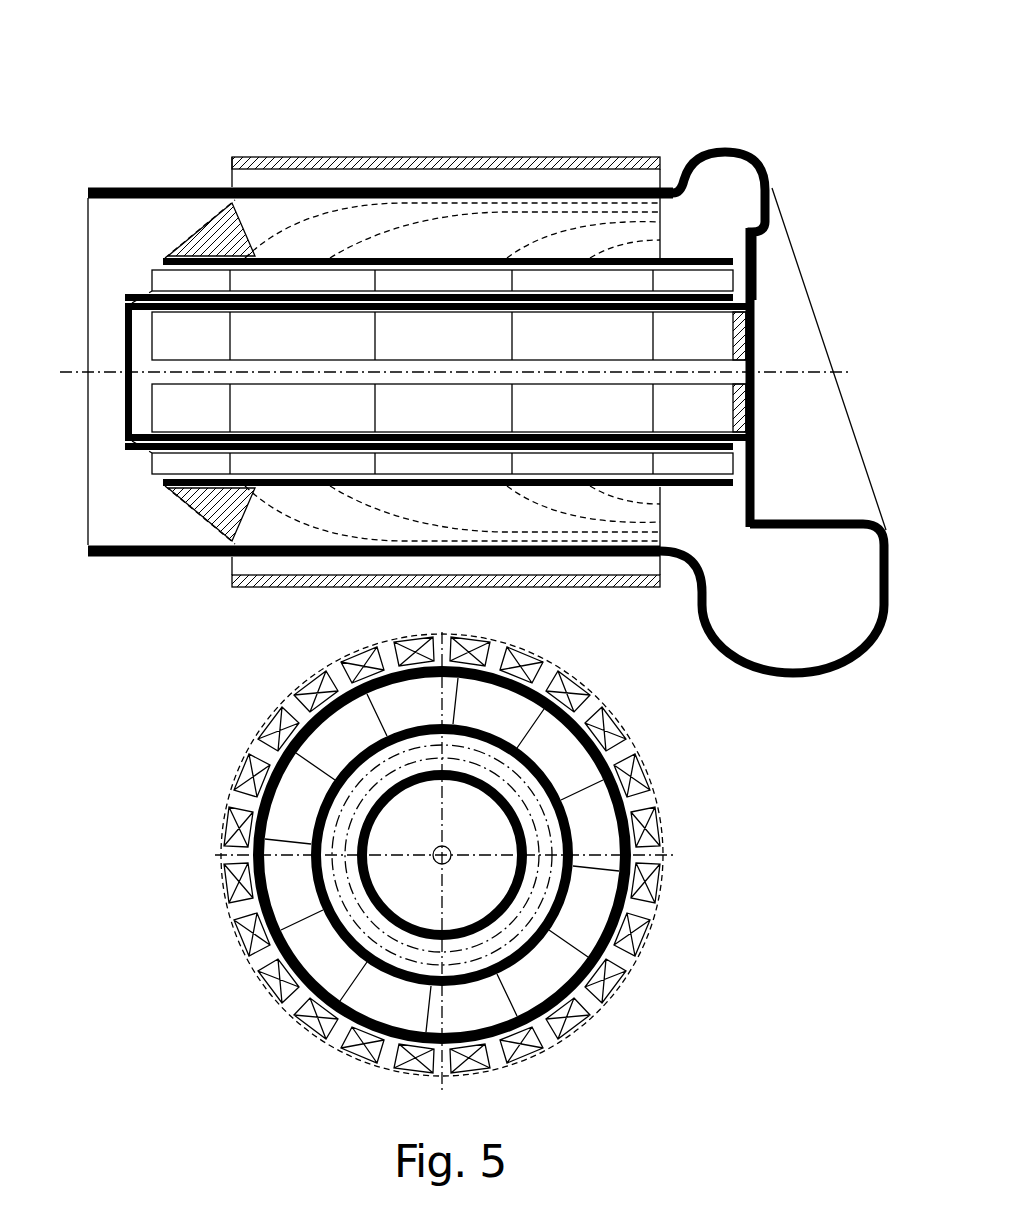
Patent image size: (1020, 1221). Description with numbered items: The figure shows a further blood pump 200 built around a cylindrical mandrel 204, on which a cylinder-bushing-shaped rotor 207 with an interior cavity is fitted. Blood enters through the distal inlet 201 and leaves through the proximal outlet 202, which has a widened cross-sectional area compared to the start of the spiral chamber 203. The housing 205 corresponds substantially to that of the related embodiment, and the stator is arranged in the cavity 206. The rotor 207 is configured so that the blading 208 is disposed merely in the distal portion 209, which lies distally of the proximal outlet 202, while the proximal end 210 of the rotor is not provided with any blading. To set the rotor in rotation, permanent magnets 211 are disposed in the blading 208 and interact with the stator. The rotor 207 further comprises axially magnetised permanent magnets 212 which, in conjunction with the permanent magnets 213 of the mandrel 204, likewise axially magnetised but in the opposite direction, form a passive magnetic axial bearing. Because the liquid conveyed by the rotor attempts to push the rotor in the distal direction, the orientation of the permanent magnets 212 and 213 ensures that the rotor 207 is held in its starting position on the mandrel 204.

The blood pump 200 is at (123, 170).
The distal inlet 201 is at (133, 518).
The proximal outlet 202 is at (787, 648).
The spiral chamber 203 is at (723, 168).
The mandrel 204 is at (760, 347).
The housing 205 is at (505, 185).
The cavity 206 is at (598, 190).
The rotor 207 is at (150, 243).
The blading 208 is at (200, 232).
The distal portion 209 is at (327, 150).
The proximal end 210 is at (698, 260).
The permanent magnets 211 is at (380, 527).
The axially magnetised permanent magnets 212 is at (130, 450).
The permanent magnets of the mandrel 213 is at (713, 426).